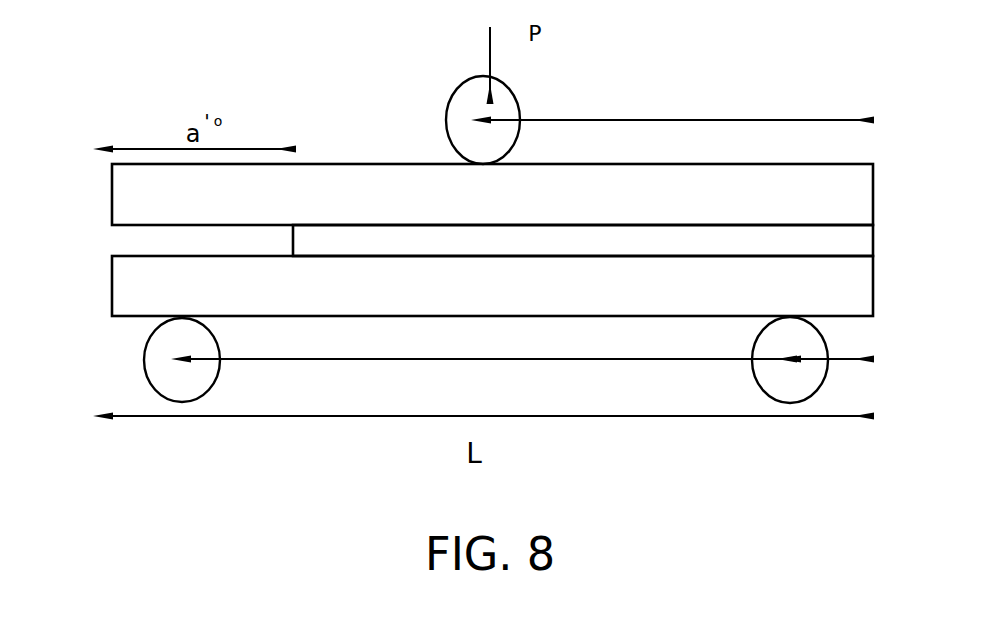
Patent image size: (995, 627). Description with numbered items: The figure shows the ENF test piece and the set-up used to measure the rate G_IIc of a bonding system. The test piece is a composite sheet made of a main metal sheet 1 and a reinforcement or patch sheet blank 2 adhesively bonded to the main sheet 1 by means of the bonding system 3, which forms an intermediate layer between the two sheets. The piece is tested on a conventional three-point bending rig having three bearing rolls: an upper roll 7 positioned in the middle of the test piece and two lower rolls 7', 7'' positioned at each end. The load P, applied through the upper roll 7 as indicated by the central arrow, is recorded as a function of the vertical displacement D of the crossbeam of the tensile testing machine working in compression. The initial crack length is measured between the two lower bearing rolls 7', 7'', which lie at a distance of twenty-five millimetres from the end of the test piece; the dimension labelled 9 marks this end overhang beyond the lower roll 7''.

The main metal sheet 1 is at (117, 207).
The reinforcement or patch sheet blank 2 is at (121, 297).
The bonding system 3 is at (864, 240).
The upper roll 7 is at (452, 119).
The lower roll 7' is at (182, 407).
The lower roll 7'' is at (789, 395).
The overhang distance 9 is at (836, 381).